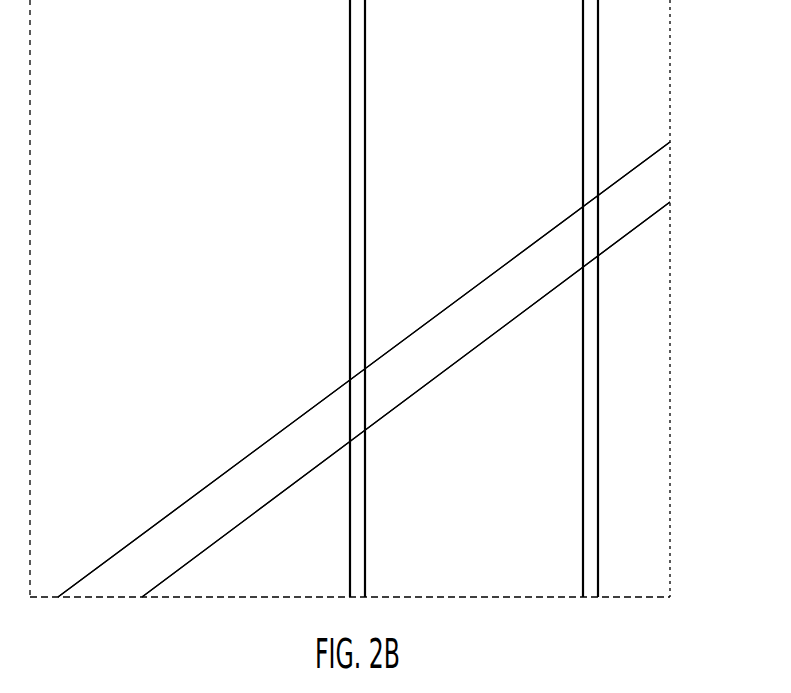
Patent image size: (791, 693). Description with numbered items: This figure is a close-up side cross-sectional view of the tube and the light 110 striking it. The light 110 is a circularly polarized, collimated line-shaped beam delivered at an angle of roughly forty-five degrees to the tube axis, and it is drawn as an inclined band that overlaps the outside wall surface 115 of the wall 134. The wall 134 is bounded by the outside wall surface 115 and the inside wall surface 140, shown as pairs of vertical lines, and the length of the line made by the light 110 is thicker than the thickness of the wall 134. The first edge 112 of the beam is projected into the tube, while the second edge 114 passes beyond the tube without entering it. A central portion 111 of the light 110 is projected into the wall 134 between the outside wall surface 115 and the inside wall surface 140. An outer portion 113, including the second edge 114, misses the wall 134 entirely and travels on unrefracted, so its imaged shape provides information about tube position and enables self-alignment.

The light 110 is at (513, 267).
The central portion 111 is at (505, 305).
The first edge 112 is at (243, 490).
The outer portion 113 is at (616, 185).
The second edge 114 is at (665, 200).
The outside wall surface 115 is at (588, 427).
The wall 134 is at (526, 538).
The inside wall surface 140 is at (350, 372).